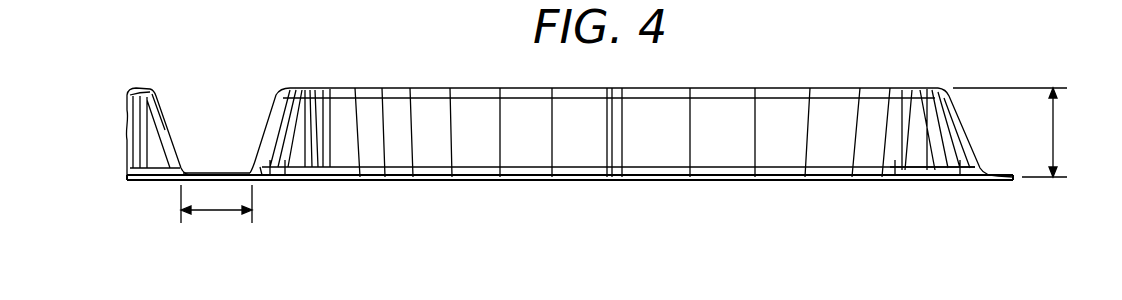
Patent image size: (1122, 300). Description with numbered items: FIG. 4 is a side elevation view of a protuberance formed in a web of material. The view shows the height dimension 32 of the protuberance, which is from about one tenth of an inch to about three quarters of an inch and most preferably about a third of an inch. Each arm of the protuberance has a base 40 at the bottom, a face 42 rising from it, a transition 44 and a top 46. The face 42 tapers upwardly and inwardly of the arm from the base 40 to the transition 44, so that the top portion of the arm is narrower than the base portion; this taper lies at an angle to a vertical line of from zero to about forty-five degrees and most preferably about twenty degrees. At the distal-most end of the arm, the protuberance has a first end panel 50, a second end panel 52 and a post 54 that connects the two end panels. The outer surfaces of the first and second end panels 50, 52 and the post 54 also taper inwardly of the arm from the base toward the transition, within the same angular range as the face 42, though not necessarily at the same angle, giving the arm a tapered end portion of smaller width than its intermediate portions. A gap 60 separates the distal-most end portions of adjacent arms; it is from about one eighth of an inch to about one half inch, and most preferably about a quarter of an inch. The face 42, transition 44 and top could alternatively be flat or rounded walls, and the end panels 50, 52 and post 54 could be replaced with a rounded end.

The height dimension 32 is at (1055, 130).
The base 40 is at (470, 183).
The face 42 is at (434, 110).
The transition 44 is at (731, 82).
The top 46 is at (846, 81).
The first end panel 50 is at (299, 150).
The second end panel 52 is at (277, 98).
The post 54 is at (258, 119).
The gap 60 is at (228, 211).